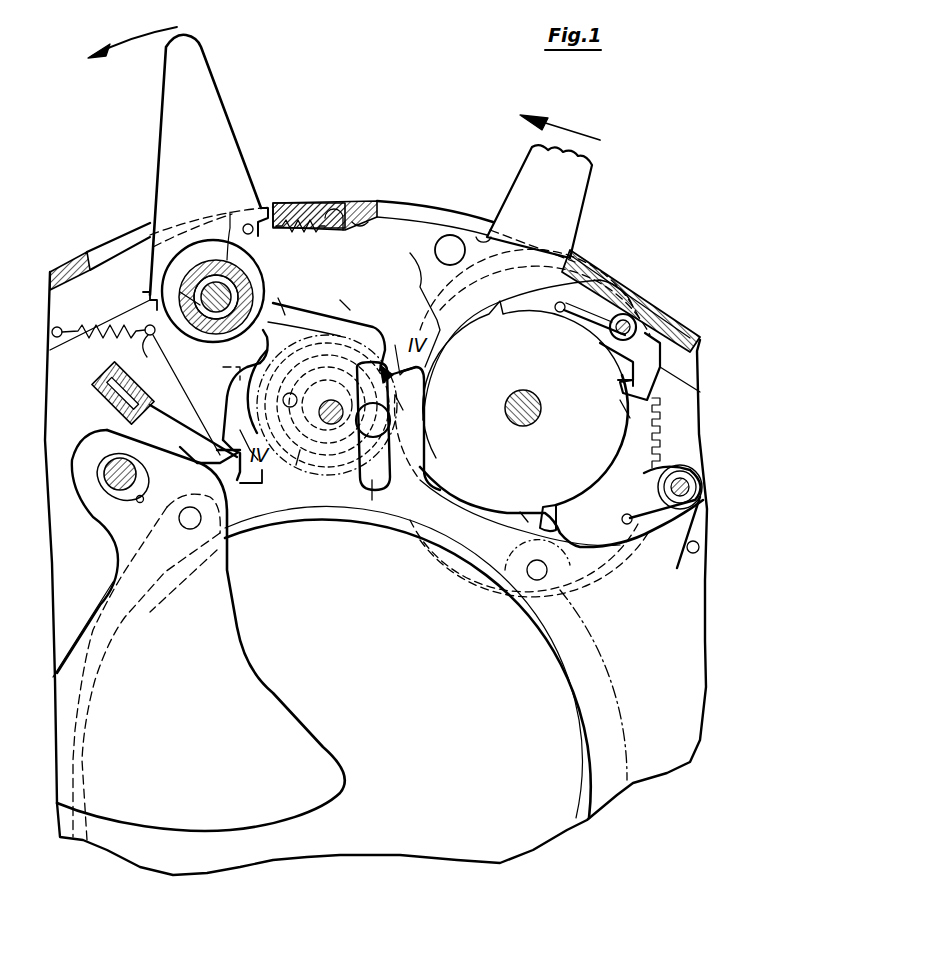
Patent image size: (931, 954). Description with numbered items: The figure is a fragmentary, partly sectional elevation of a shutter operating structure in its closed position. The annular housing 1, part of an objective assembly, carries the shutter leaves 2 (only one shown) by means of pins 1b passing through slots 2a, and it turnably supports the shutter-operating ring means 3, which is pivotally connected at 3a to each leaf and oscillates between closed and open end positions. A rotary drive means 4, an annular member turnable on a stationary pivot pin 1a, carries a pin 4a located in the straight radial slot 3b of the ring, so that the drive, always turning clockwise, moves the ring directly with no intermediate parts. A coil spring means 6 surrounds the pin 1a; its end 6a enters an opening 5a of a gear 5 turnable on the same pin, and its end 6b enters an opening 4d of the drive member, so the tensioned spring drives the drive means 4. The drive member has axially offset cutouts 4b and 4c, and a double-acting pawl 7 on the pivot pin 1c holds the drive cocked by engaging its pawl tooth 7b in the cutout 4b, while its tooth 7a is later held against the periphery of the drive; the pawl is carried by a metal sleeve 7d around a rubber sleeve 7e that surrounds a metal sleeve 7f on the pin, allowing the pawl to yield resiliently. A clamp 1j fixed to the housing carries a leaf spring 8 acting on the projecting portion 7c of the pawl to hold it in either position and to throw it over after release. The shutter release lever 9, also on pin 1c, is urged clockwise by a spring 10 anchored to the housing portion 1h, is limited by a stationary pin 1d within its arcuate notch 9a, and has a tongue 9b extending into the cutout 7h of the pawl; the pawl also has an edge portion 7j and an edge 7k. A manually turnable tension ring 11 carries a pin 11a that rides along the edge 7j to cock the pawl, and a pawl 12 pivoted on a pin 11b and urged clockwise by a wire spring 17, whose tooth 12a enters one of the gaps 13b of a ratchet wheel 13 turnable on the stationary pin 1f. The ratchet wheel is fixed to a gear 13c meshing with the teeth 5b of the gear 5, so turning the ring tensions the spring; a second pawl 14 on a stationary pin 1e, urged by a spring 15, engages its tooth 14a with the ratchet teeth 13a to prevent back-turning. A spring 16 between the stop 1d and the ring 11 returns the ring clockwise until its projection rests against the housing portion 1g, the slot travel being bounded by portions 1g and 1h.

The housing 1 is at (580, 693).
The stationary pivot pin 1a is at (320, 470).
The pins 1b is at (103, 487).
The pivot pin 1c is at (230, 212).
The stationary pin 1d is at (142, 336).
The stationary pin 1e is at (660, 540).
The stationary pivot pin 1f is at (514, 420).
The portion of outer wall 1g is at (575, 265).
The portion of housing 1h is at (362, 218).
The clamp 1j is at (105, 400).
The shutter leaves 2 is at (273, 717).
The slots 2a is at (138, 503).
The shutter-operating ring means 3 is at (585, 640).
The pivotal connection 3a is at (203, 522).
The slot 3b is at (372, 500).
The rotary drive means 4 is at (223, 367).
The pin 4a is at (410, 420).
The cutout 4b is at (392, 380).
The cutout 4c is at (258, 472).
The opening 4d is at (264, 391).
The gear 5 is at (270, 457).
The opening 5a is at (327, 395).
The teeth 5b is at (296, 465).
The spring means 6 is at (352, 465).
The spring end 6a is at (360, 330).
The spring end 6b is at (357, 293).
The double-acting pawl 7 is at (180, 267).
The tooth 7a is at (250, 448).
The pawl tooth 7b is at (387, 345).
The projecting portion 7c is at (217, 450).
The sleeve 7d is at (180, 290).
The rubber sleeve 7e is at (177, 293).
The sleeve 7f is at (208, 282).
The cutout 7h is at (326, 327).
The edge portion 7j is at (410, 255).
The edge 7k is at (309, 235).
The leaf spring 8 is at (173, 405).
The shutter release lever 9 is at (205, 100).
The arcuate notch 9a is at (150, 307).
The tongue 9b is at (285, 300).
The spring 10 is at (296, 203).
The tension ring 11 is at (523, 183).
The pin 11a is at (445, 240).
The pin 11b is at (625, 316).
The pawl 12 is at (627, 353).
The tooth 12a is at (620, 385).
The ratchet wheel 13 is at (467, 457).
The teeth 13a is at (548, 510).
The gaps 13b is at (626, 410).
The gear 13c is at (650, 468).
The second pawl 14 is at (607, 530).
The tooth 14a is at (527, 557).
The spring 15 is at (640, 513).
The spring 16 is at (92, 331).
The wire spring 17 is at (567, 316).